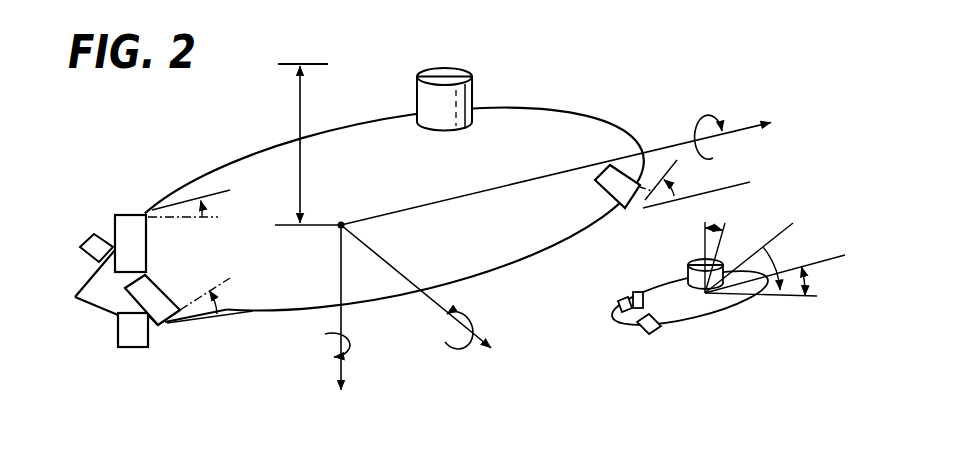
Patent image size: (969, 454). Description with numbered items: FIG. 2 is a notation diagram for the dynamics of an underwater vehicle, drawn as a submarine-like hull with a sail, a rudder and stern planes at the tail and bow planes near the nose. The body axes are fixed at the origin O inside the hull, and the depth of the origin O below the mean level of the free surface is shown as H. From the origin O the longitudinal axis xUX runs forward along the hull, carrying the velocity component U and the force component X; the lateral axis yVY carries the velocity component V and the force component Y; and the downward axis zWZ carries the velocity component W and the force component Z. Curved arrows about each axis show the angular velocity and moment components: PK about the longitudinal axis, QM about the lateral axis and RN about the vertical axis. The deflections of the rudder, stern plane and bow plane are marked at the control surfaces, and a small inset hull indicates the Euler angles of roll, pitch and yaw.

The depth of origin below free surface H is at (308, 144).
The origin of body axes O is at (342, 210).
The x body axis with velocity component U and force component X xUX is at (580, 164).
The y body axis with velocity component V and force component Y yVY is at (439, 294).
The z body axis with velocity component W and force component Z zWZ is at (360, 323).
The angular velocity component P and moment component K PK is at (712, 120).
The angular velocity component Q and moment component M QM is at (479, 321).
The angular velocity component R and moment component N RN is at (362, 348).